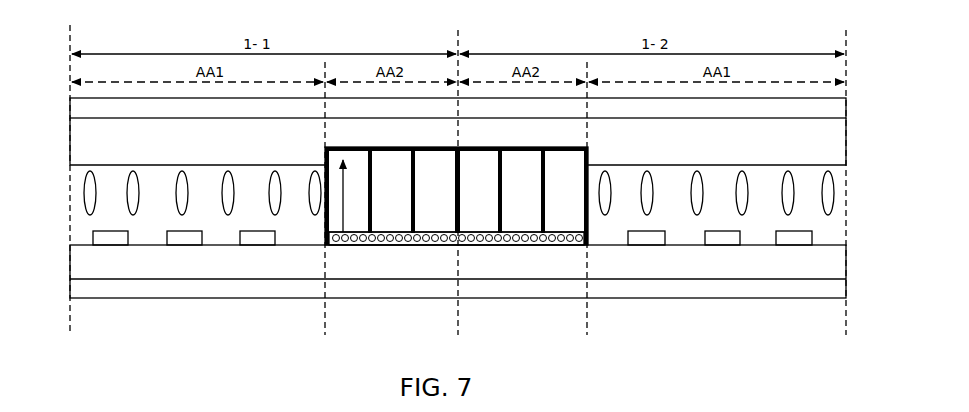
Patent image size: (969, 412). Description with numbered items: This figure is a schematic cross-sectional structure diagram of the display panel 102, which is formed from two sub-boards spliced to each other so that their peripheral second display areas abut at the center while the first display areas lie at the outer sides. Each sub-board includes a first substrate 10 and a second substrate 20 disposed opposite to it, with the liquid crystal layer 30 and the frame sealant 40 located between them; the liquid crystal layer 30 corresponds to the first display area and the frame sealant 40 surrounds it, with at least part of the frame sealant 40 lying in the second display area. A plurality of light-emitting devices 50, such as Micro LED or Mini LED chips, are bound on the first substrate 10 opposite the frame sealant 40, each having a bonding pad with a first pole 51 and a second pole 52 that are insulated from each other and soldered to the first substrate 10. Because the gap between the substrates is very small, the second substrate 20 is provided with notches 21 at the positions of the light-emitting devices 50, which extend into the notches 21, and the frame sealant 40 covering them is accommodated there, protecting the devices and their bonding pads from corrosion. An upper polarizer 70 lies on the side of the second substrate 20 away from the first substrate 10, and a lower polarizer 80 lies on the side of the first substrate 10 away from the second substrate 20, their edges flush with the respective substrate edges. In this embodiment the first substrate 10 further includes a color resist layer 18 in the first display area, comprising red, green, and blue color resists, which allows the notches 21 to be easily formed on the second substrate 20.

The display panel 102 is at (152, 26).
The upper polarizer 70 is at (93, 108).
The second substrate 20 is at (93, 148).
The liquid crystal layer 30 is at (93, 201).
The first substrate 10 is at (93, 266).
The lower polarizer 80 is at (93, 292).
The color resist layer 18 is at (118, 238).
The notches 21 is at (343, 245).
The first pole 51 is at (383, 245).
The second pole 52 is at (400, 245).
The frame sealant 40 is at (500, 245).
The light-emitting devices 50 is at (570, 207).